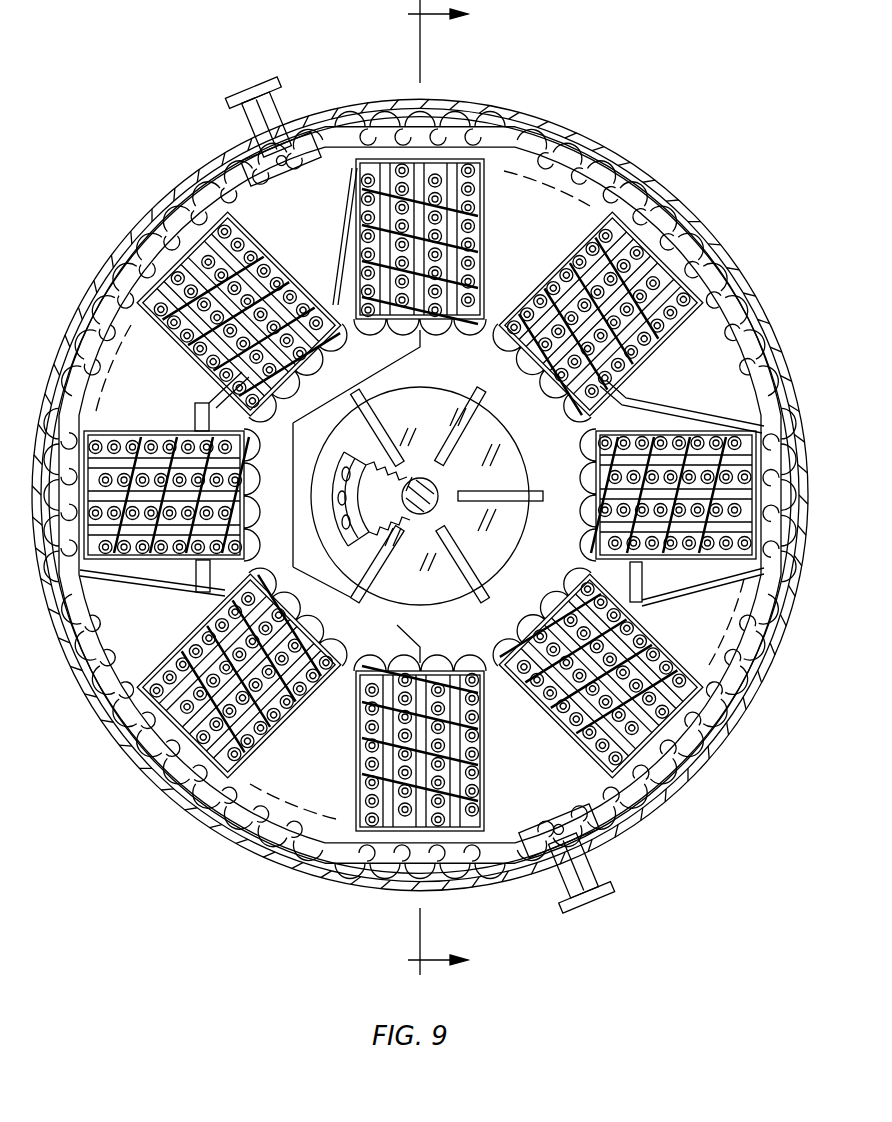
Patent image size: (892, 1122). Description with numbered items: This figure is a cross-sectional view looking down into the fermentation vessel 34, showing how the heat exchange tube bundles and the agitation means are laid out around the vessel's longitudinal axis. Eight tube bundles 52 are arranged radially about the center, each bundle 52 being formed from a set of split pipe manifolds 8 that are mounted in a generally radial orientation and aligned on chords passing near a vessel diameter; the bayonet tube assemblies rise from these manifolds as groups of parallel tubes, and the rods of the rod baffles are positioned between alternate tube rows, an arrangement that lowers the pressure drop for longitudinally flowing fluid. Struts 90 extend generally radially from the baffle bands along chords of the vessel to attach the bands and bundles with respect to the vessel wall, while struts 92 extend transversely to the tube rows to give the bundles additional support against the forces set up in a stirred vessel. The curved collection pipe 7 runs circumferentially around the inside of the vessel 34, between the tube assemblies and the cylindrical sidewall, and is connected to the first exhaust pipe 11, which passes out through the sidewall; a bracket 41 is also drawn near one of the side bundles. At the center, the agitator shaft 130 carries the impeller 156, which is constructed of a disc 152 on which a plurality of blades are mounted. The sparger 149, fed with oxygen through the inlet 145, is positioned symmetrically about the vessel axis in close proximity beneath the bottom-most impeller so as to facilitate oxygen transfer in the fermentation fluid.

The curved collection pipe 7 is at (303, 174).
The split pipe manifold 8 is at (380, 650).
The first exhaust pipe 11 is at (283, 98).
The vessel 34 is at (584, 132).
The support bracket 41 is at (185, 430).
The tube bundle 52 is at (678, 330).
The struts 90 is at (747, 713).
The struts 92 is at (688, 412).
The shaft 130 is at (402, 501).
The inlet 145 is at (322, 525).
The sparger 149 is at (324, 456).
The disc 152 is at (513, 458).
The impeller 156 is at (473, 392).